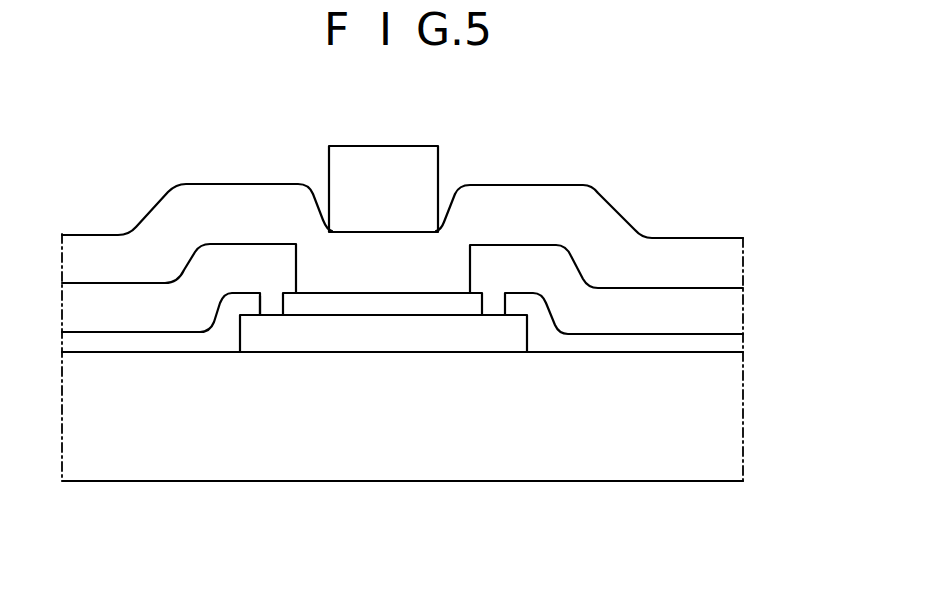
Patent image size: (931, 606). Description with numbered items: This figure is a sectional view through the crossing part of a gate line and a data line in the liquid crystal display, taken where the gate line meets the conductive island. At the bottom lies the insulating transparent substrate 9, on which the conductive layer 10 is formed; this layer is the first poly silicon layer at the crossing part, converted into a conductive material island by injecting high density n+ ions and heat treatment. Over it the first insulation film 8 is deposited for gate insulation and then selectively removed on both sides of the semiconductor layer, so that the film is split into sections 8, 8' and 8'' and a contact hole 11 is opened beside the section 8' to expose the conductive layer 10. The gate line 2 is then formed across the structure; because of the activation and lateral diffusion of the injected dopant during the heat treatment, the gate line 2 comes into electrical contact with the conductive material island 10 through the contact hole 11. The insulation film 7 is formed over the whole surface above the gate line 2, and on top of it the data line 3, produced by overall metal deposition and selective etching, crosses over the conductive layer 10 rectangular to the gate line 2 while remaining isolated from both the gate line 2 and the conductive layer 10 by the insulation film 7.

The gate line 2 is at (718, 309).
The data line 3 is at (378, 163).
The insulation film 7 is at (536, 212).
The first insulation film 8 is at (675, 326).
The first insulation film section 8' is at (382, 429).
The first insulation film section 8'' is at (161, 424).
The insulating transparent substrate 9 is at (718, 417).
The conductive layer 10 is at (455, 338).
The contact hole 11 is at (269, 308).